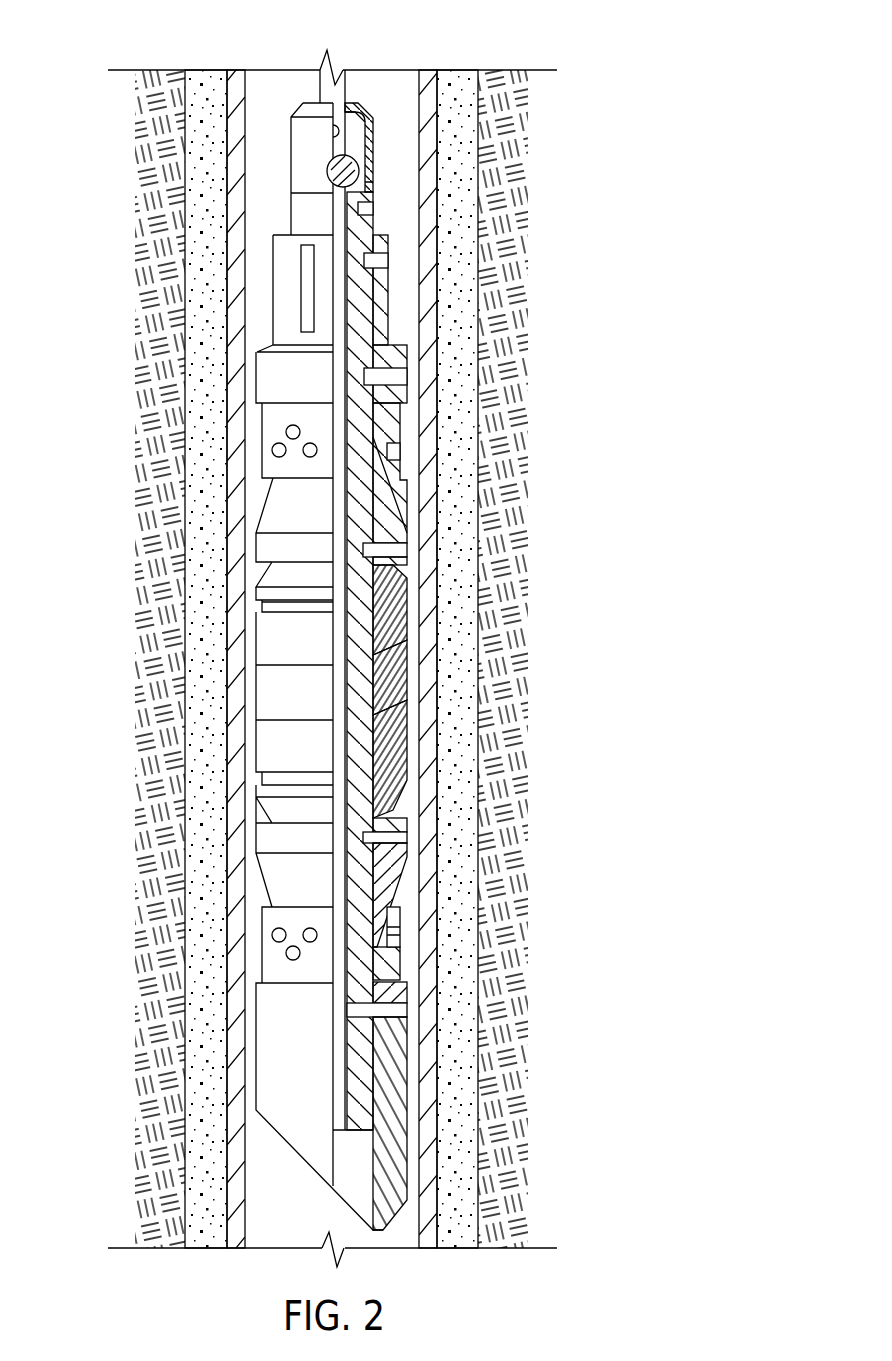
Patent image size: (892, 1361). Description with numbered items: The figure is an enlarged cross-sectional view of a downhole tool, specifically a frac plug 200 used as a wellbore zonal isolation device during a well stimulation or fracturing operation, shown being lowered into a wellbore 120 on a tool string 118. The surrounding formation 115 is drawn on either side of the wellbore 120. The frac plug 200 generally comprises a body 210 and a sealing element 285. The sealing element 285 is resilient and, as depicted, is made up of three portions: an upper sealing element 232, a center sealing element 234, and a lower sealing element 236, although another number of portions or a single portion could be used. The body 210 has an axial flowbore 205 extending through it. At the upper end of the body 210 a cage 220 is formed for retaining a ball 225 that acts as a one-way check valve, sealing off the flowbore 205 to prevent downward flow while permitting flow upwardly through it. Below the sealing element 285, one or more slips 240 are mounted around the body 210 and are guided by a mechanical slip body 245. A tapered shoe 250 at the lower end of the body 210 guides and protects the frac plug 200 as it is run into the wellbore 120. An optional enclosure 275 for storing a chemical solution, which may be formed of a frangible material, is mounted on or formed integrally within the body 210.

The frac plug 200 is at (408, 42).
The tool string 118 is at (345, 85).
The wellbore 120 is at (262, 183).
The formation 115 is at (517, 1063).
The ball 225 is at (342, 158).
The cage 220 is at (372, 183).
The enclosure 275 is at (314, 278).
The body 210 is at (372, 317).
The axial flowbore 205 is at (437, 666).
The upper sealing element 232 is at (395, 635).
The center sealing element 234 is at (393, 693).
The lower sealing element 236 is at (400, 752).
The sealing element 285 is at (546, 691).
The mechanical slip body 245 is at (390, 880).
The slips 240 is at (390, 963).
The tapered shoe 250 is at (392, 1167).